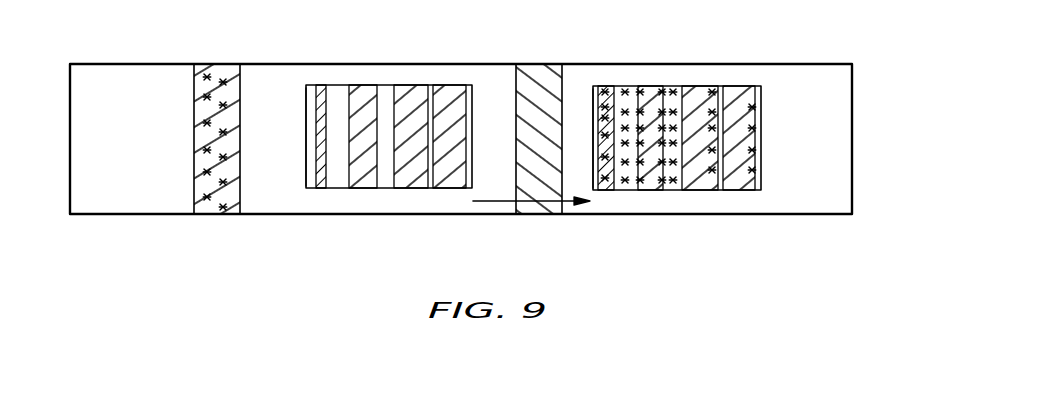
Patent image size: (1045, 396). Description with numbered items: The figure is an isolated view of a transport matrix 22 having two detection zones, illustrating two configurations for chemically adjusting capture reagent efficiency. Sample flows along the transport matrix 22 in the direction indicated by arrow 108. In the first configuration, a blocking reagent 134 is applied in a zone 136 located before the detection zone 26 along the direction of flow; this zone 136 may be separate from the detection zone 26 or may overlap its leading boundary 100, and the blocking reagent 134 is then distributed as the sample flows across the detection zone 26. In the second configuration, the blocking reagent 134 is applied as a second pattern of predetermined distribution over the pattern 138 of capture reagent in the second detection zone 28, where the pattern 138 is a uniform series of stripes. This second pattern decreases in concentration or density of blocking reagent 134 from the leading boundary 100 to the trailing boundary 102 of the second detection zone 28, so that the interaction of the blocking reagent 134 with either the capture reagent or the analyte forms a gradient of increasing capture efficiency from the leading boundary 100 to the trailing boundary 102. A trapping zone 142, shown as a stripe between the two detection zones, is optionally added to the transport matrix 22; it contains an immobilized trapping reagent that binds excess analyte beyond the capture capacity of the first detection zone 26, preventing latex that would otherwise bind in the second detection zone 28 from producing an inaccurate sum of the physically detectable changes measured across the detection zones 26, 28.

The transport matrix 22 is at (118, 84).
The detection zone 26 is at (378, 85).
The second detection zone 28 is at (705, 87).
The leading boundary 100 is at (306, 98).
The trailing boundary 102 is at (472, 85).
The arrow 108 is at (490, 201).
The blocking reagent 134 is at (223, 207).
The zone 136 is at (240, 62).
The pattern of capture reagent 138 is at (760, 195).
The trapping zone 142 is at (537, 80).